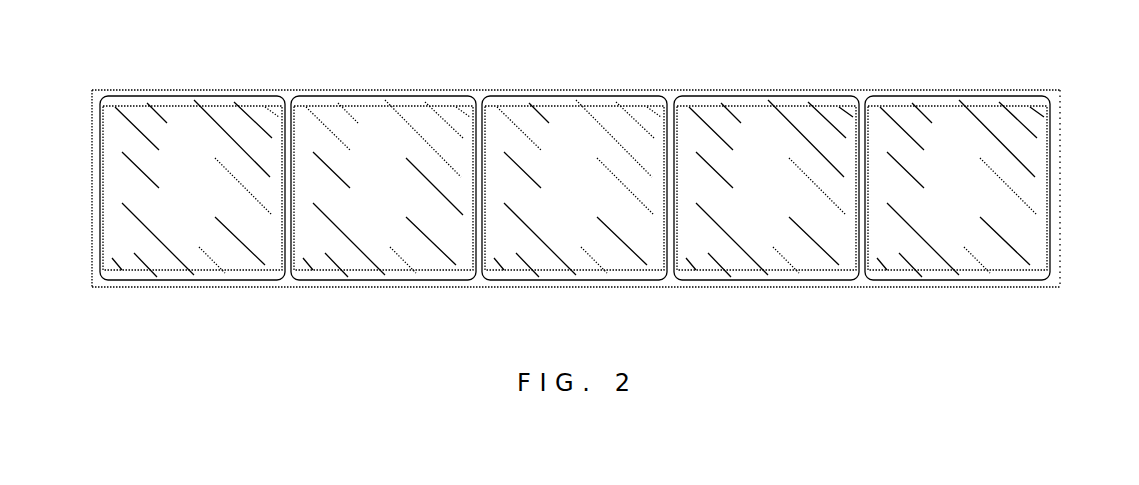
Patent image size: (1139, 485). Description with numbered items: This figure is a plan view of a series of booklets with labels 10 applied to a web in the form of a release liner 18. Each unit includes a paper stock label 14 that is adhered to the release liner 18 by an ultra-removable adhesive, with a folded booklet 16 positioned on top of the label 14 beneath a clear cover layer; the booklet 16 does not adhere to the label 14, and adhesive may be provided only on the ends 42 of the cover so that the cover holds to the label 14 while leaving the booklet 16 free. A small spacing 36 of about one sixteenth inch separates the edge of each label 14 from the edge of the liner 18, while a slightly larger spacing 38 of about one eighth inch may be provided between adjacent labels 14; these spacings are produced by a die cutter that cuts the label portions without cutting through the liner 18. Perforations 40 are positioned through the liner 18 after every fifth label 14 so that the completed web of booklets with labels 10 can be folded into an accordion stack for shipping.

The booklet with label 10 is at (585, 187).
The label 14 is at (168, 277).
The booklet 16 is at (225, 248).
The release liner 18 is at (287, 285).
The spacing 36 is at (317, 96).
The spacing 38 is at (480, 240).
The perforations 40 is at (92, 286).
The ends of the cover 42 is at (542, 105).